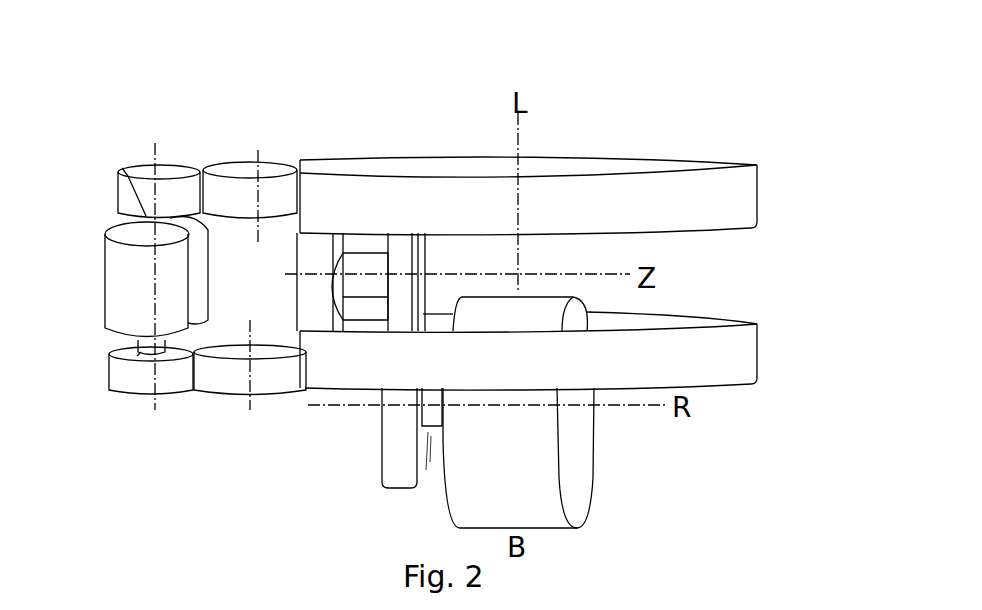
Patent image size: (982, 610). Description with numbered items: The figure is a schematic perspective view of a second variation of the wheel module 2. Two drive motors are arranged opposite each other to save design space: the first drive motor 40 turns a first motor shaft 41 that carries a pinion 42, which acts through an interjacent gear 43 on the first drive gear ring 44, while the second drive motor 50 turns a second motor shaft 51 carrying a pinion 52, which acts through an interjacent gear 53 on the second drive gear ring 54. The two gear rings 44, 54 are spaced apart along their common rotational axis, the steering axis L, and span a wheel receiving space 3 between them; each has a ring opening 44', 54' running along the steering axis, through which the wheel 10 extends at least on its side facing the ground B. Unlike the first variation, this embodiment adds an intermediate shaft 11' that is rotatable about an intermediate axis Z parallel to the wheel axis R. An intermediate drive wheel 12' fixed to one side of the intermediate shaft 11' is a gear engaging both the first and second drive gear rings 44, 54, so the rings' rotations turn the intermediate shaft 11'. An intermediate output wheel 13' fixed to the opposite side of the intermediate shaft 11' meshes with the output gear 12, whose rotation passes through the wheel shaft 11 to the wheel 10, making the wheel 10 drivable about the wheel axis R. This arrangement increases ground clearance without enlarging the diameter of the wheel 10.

The wheel module 2 is at (116, 50).
The wheel receiving space 3 is at (720, 248).
The wheel 10 is at (587, 493).
The wheel shaft 11 is at (416, 461).
The output gear 12 is at (373, 443).
The intermediate shaft 11' is at (366, 222).
The intermediate drive wheel 12' is at (283, 282).
The intermediate output wheel 13' is at (451, 282).
The first drive motor 40 is at (199, 243).
The first motor shaft 41 is at (124, 168).
The pinion 42 is at (160, 163).
The interjacent gear 43 is at (236, 160).
The first drive gear ring 44 is at (534, 177).
The ring opening 44' is at (429, 128).
The second drive motor 50 is at (192, 326).
The second motor shaft 51 is at (137, 356).
The pinion 52 is at (172, 386).
The interjacent gear 53 is at (266, 388).
The second drive gear ring 54 is at (530, 365).
The ring opening 54' is at (738, 288).